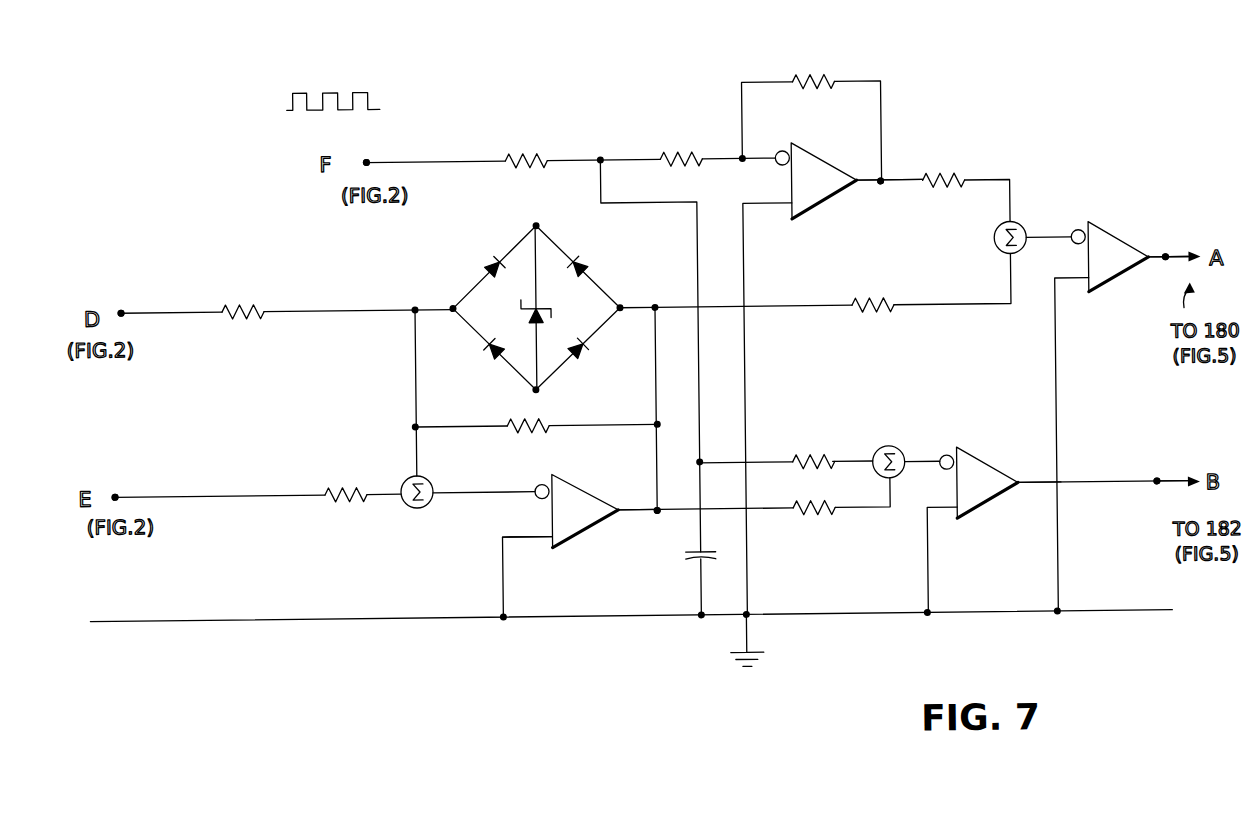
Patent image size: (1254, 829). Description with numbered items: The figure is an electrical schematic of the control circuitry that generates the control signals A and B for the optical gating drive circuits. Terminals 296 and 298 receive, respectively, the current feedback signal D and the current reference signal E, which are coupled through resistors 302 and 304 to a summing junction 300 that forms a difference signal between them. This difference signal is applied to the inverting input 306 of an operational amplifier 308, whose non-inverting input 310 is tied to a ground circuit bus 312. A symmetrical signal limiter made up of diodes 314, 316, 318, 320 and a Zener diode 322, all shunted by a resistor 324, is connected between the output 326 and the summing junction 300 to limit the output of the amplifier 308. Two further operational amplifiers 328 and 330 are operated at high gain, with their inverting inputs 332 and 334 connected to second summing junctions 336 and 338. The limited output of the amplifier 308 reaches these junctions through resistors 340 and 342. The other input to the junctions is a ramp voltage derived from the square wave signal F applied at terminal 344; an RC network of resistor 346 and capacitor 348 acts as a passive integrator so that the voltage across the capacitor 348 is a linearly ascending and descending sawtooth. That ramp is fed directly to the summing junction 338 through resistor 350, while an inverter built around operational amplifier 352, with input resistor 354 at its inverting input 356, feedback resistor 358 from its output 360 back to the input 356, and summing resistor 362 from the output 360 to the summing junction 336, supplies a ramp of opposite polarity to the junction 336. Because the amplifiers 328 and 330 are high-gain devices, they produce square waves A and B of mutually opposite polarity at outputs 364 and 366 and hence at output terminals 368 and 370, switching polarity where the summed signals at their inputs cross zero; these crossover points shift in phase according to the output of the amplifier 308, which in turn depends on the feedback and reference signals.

The terminal 296 is at (130, 300).
The terminal 298 is at (126, 484).
The summing junction 300 is at (416, 507).
The resistor 302 is at (248, 296).
The resistor 304 is at (350, 482).
The inverting input 306 is at (534, 480).
The operational amplifier 308 is at (590, 542).
The non-inverting input 310 is at (548, 542).
The ground circuit bus 312 is at (548, 628).
The diode 314 is at (488, 258).
The diode 316 is at (592, 254).
The diode 318 is at (594, 352).
The diode 320 is at (478, 356).
The Zener diode 322 is at (546, 302).
The resistor 324 is at (548, 438).
The output 326 is at (624, 502).
The operational amplifier 328 is at (1110, 284).
The operational amplifier 330 is at (996, 508).
The inverting input 332 is at (1066, 226).
The inverting input 334 is at (952, 456).
The second summing junction 336 is at (984, 259).
The second summing junction 338 is at (898, 446).
The resistor 340 is at (896, 288).
The resistor 342 is at (824, 518).
The terminal 344 is at (378, 155).
The resistor 346 is at (546, 150).
The capacitor 348 is at (684, 568).
The resistor 350 is at (822, 454).
The operational amplifier 352 is at (818, 206).
The input resistor 354 is at (676, 147).
The inverting input 356 is at (784, 150).
The feedback resistor 358 is at (818, 76).
The output 360 is at (870, 195).
The summing resistor 362 is at (954, 170).
The output 364 is at (1152, 258).
The output 366 is at (1028, 480).
The output terminal 368 is at (1180, 256).
The output terminal 370 is at (1158, 478).